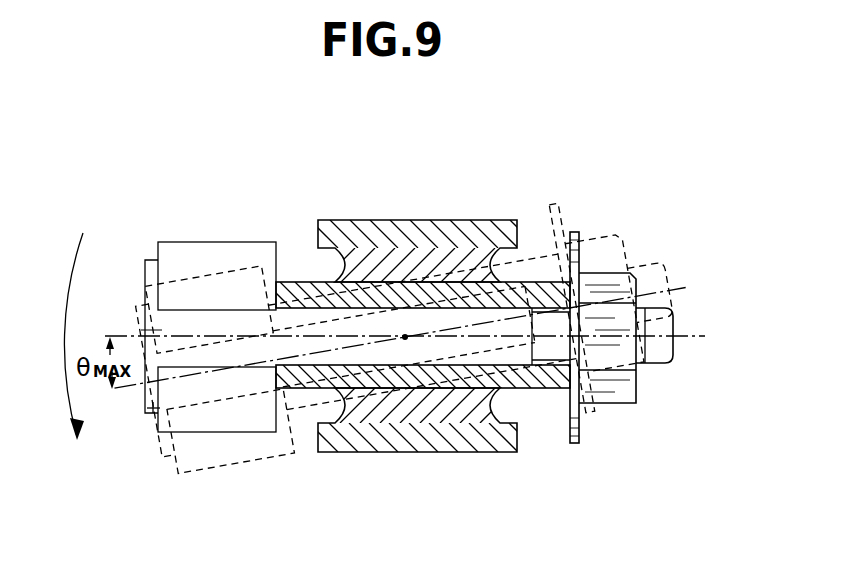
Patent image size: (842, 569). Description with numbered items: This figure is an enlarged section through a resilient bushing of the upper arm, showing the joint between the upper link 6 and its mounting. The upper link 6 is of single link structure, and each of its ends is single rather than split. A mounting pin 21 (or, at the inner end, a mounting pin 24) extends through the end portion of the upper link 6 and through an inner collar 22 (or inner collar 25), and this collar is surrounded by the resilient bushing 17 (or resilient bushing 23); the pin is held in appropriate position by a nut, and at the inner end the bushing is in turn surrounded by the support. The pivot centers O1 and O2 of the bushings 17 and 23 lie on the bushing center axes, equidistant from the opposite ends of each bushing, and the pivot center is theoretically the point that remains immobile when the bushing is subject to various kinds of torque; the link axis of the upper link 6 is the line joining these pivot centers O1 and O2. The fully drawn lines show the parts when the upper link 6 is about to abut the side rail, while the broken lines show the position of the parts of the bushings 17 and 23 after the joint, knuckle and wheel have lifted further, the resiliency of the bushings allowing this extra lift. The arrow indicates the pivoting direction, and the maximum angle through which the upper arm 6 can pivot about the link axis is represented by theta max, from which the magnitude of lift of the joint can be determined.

The mounting pin 21 is at (143, 306).
The mounting pin 24 is at (150, 272).
The upper link 6 is at (223, 250).
The inner collar 22 is at (420, 272).
The inner collar 25 is at (293, 293).
The resilient bushing 17 is at (413, 304).
The resilient bushing 23 is at (453, 232).
The pivot center O1 is at (443, 417).
The pivot center O2 is at (405, 340).